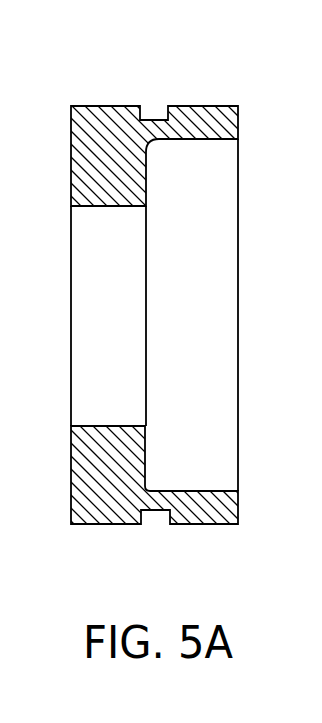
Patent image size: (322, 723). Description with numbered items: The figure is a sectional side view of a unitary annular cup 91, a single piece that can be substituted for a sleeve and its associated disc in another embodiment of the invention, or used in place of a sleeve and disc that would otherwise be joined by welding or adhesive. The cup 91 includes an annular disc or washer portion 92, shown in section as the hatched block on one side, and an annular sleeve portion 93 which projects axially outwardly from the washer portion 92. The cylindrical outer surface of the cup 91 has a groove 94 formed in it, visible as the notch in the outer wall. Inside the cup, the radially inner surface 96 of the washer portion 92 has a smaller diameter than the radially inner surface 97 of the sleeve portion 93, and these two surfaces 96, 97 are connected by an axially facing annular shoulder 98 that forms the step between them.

The unitary annular cup 91 is at (94, 106).
The washer portion 92 is at (82, 191).
The sleeve portion 93 is at (217, 122).
The groove 94 is at (166, 116).
The radially inner surface of the washer portion 96 is at (92, 206).
The radially inner surface of the sleeve portion 97 is at (203, 141).
The annular shoulder 98 is at (147, 177).